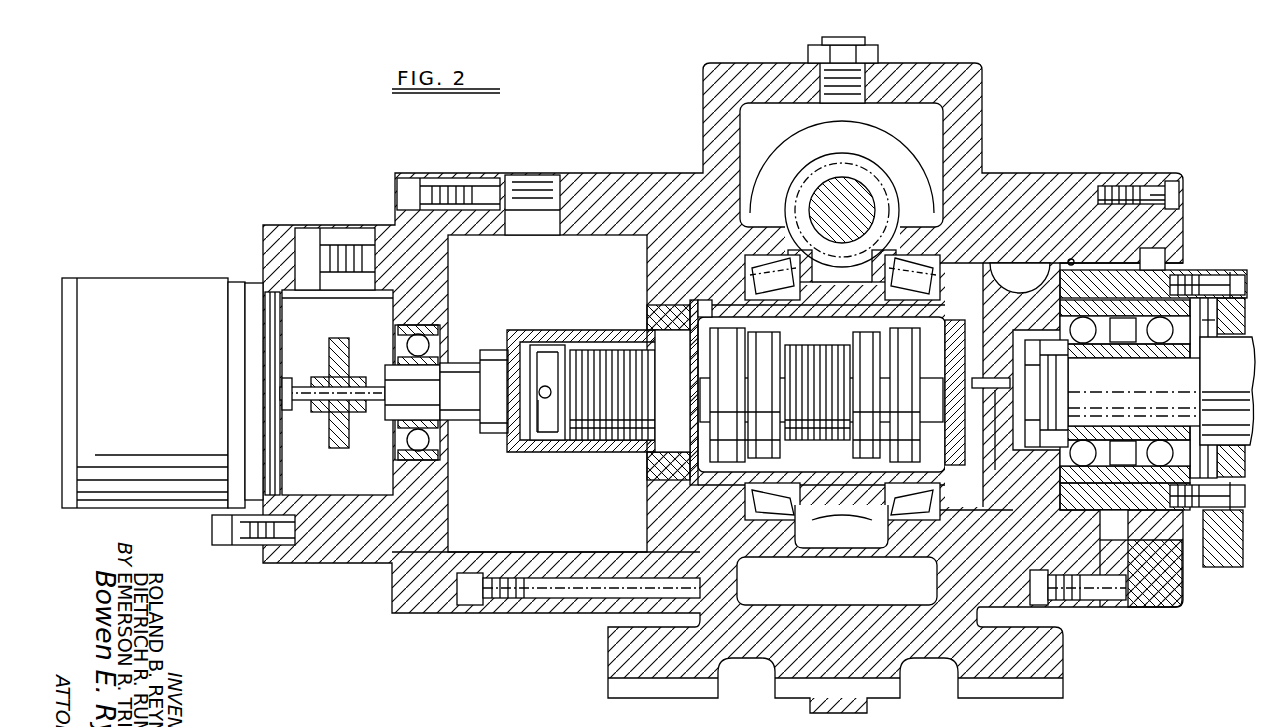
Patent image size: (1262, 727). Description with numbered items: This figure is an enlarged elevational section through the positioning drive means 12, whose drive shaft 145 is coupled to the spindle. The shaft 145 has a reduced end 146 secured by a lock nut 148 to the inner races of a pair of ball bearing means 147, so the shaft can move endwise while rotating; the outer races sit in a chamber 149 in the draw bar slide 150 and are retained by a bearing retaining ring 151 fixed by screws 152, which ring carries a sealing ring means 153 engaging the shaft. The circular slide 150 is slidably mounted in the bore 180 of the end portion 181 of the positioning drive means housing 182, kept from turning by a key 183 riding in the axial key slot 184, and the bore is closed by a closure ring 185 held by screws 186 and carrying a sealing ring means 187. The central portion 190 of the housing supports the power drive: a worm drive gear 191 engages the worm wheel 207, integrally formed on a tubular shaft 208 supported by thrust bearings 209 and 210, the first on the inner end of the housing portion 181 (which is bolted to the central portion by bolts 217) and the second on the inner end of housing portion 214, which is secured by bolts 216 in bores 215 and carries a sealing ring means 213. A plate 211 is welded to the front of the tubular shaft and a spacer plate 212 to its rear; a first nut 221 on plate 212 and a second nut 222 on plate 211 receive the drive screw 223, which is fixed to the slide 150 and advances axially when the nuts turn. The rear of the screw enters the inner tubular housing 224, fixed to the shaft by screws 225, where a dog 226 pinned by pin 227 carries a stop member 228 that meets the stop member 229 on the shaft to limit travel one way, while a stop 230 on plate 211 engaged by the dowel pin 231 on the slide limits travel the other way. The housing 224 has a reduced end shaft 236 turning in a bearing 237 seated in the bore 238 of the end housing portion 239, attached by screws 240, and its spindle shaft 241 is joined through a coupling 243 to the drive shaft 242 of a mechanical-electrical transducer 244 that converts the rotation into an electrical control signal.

The positioning drive means 12 is at (666, 170).
The drive shaft 145 is at (1255, 393).
The reduced end 146 is at (1185, 398).
The ball bearing means 147 is at (1160, 338).
The lock nut 148 is at (1045, 350).
The chamber 149 is at (1152, 308).
The draw bar slide 150 is at (1155, 288).
The bearing retaining ring 151 is at (1222, 512).
The screws 152 is at (1243, 338).
The sealing ring means 153 is at (1255, 368).
The bore 180 is at (1100, 500).
The end portion 181 is at (1108, 182).
The positioning drive means housing 182 is at (986, 129).
The key 183 is at (1040, 289).
The key slot 184 is at (1071, 260).
The closure ring 185 is at (1170, 597).
The screws 186 is at (1176, 195).
The sealing ring means 187 is at (1163, 251).
The central portion 190 is at (942, 80).
The worm drive gear 191 is at (852, 190).
The worm wheel 207 is at (842, 534).
The tubular shaft 208 is at (882, 505).
The thrust bearing 209 is at (920, 289).
The thrust bearing 210 is at (714, 294).
The plate 211 is at (955, 468).
The spacer plate 212 is at (700, 500).
The sealing ring means 213 is at (698, 518).
The housing portion 214 is at (588, 604).
The bores 215 is at (503, 597).
The bolts 216 is at (537, 586).
The bolts 217 is at (1043, 594).
The first nut 221 is at (812, 478).
The second nut 222 is at (905, 445).
The drive screw 223 is at (835, 362).
The inner tubular housing 224 is at (553, 330).
The screws 225 is at (705, 482).
The dog 226 is at (550, 408).
The pin 227 is at (541, 398).
The stop member 228 is at (565, 392).
The stop member 229 is at (641, 444).
The stop 230 is at (980, 380).
The dowel pin 231 is at (998, 392).
The reduced end shaft 236 is at (466, 370).
The bearing 237 is at (415, 452).
The bore 238 is at (452, 326).
The end housing portion 239 is at (412, 233).
The screws 240 is at (413, 190).
The spindle shaft 241 is at (381, 398).
The drive shaft 242 is at (300, 393).
The coupling 243 is at (335, 347).
The mechanical-electrical transducer 244 is at (150, 278).